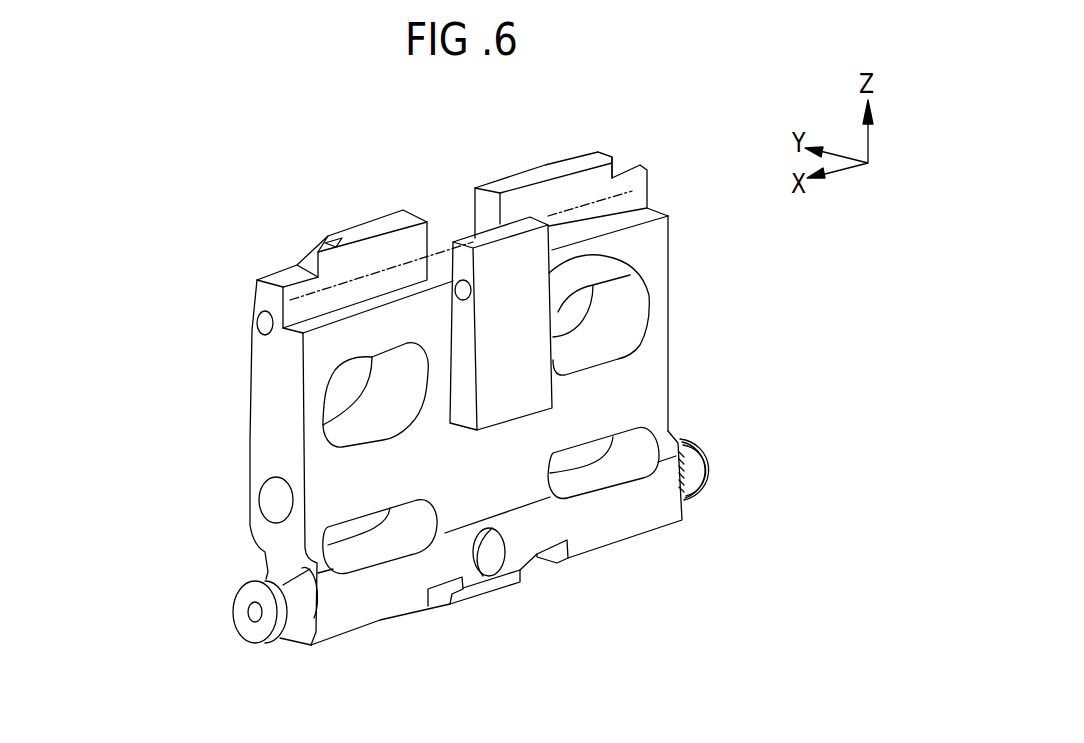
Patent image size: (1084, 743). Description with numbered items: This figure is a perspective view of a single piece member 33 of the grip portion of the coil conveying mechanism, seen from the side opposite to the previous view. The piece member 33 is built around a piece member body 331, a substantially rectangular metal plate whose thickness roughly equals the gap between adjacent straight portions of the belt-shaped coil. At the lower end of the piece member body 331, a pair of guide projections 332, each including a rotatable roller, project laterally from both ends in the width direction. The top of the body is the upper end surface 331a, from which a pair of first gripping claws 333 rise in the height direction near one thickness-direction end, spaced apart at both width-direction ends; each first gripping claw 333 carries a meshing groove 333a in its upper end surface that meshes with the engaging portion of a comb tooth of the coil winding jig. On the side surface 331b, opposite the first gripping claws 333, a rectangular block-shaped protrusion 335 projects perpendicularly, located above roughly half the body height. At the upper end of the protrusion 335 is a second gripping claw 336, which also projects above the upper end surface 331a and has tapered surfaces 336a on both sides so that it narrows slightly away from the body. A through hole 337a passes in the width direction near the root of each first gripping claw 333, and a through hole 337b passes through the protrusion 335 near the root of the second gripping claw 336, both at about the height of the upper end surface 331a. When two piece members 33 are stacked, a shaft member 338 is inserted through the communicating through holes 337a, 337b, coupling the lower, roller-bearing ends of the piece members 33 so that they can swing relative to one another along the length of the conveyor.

The piece member 33 is at (178, 226).
The piece member body 331 is at (273, 431).
The upper end surface 331a is at (655, 207).
The side surface 331b is at (650, 373).
The guide projection 332 is at (240, 613).
The first gripping claw 333 is at (372, 247).
The meshing groove 333a is at (317, 250).
The protrusion 335 is at (540, 333).
The second gripping claw 336 is at (515, 212).
The tapered surface 336a is at (667, 232).
The through hole 337a is at (256, 325).
The through hole 337b is at (300, 336).
The shaft member 338 is at (452, 262).